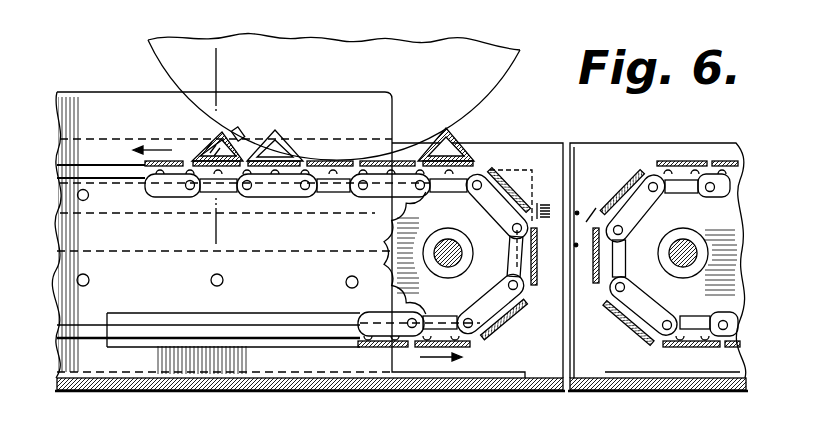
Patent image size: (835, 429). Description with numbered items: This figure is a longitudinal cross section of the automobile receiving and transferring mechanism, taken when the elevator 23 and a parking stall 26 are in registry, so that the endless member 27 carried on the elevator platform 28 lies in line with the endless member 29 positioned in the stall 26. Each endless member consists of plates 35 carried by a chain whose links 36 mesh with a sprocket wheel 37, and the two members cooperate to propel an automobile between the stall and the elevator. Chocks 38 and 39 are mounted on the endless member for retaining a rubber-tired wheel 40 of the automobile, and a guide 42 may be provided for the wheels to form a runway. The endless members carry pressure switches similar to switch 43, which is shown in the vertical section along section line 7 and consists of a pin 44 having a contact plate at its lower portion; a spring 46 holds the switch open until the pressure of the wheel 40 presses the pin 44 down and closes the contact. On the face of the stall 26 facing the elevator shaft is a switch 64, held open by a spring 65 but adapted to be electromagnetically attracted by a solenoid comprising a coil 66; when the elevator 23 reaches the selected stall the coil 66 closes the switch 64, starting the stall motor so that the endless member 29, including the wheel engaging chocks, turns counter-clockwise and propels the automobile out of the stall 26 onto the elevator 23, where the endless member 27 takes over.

The section line 7— 7 is at (224, 58).
The elevator 23 is at (262, 396).
The parking stall 26 is at (660, 394).
The endless member 27 is at (515, 169).
The elevator platform 28 is at (128, 390).
The endless member 29 is at (680, 160).
The plates 35 is at (142, 162).
The links 36 is at (300, 192).
The sprocket wheel 37 is at (368, 237).
The chock 38 is at (207, 150).
The chock 39 is at (455, 140).
The rubber-tired wheel 40 is at (495, 98).
The guide 42 is at (392, 92).
The pressure switch 43 is at (249, 132).
The pin 44 is at (236, 128).
The spring 46 is at (223, 158).
The switch 64 is at (576, 245).
The spring 65 is at (592, 216).
The coil 66 is at (553, 192).